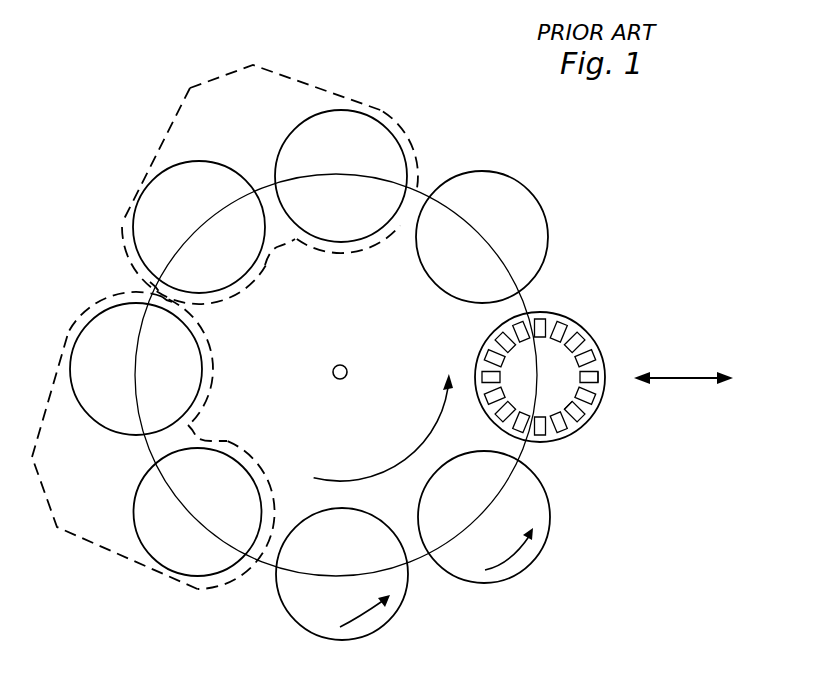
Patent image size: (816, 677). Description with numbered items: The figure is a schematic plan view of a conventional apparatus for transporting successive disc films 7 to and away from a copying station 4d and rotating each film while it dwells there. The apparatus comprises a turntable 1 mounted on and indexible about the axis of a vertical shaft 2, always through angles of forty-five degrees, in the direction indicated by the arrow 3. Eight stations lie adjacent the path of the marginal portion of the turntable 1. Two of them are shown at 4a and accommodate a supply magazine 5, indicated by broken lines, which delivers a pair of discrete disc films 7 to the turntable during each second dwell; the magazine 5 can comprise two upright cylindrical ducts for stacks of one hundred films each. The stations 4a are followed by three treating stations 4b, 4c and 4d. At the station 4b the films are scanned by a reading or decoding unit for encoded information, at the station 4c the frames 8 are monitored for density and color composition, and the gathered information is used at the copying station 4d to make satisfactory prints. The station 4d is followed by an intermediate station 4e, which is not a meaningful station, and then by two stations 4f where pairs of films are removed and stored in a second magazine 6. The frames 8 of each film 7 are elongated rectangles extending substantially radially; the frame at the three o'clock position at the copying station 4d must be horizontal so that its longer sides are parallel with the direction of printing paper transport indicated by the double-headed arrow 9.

The turntable 1 is at (523, 293).
The vertical shaft 2 is at (345, 366).
The arrow 3 is at (377, 472).
The stations 4a is at (157, 487).
The treating station 4b is at (395, 580).
The treating station 4c is at (525, 490).
The copying station 4d is at (573, 328).
The intermediate station 4e is at (522, 204).
The stations 4f is at (300, 153).
The supply magazine 5 is at (113, 543).
The second magazine 6 is at (297, 93).
The disc film 7 is at (598, 390).
The frame 8 is at (603, 368).
The double-headed arrow 9 is at (688, 378).